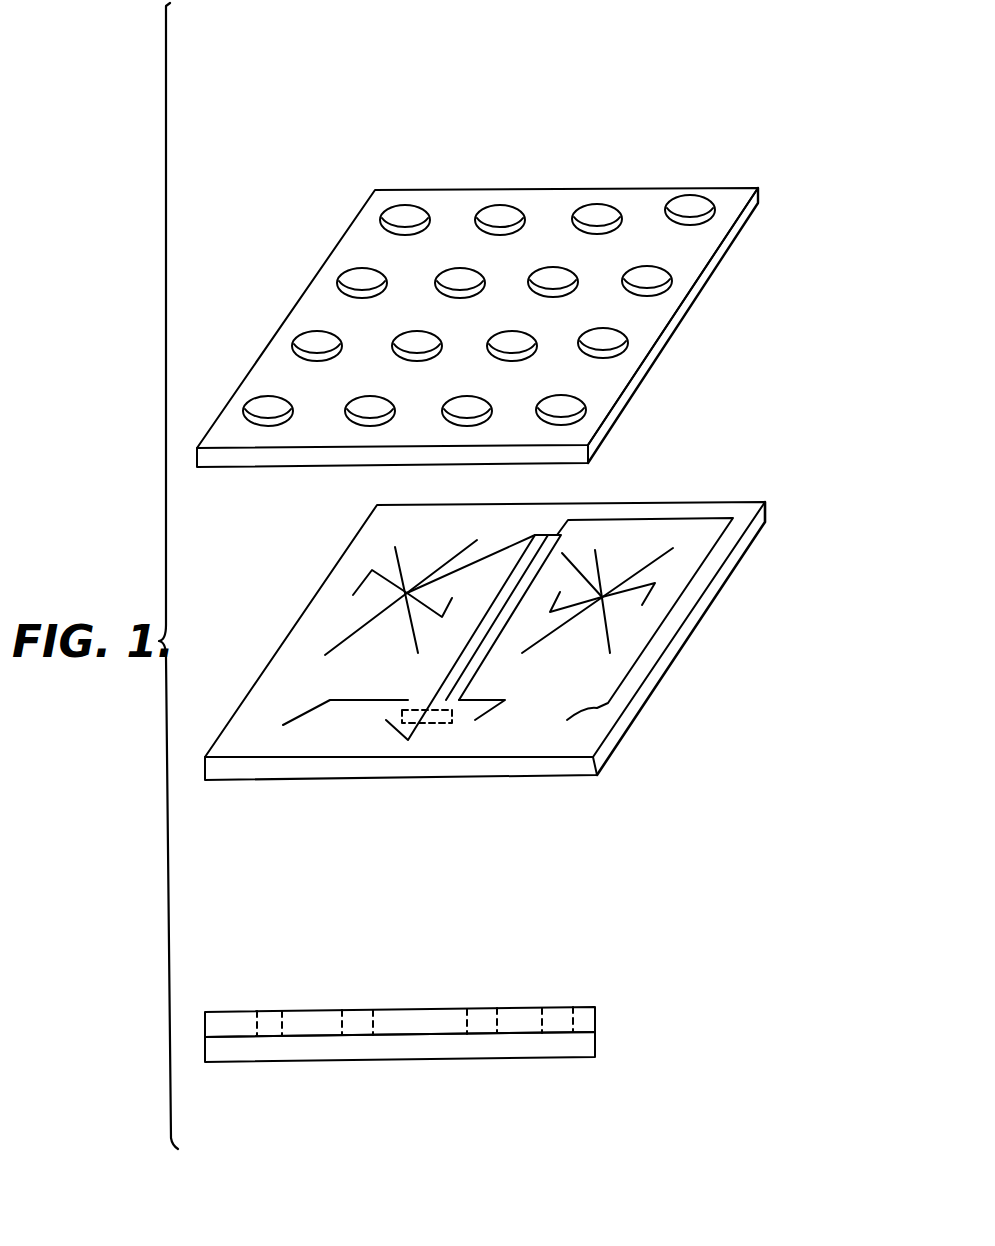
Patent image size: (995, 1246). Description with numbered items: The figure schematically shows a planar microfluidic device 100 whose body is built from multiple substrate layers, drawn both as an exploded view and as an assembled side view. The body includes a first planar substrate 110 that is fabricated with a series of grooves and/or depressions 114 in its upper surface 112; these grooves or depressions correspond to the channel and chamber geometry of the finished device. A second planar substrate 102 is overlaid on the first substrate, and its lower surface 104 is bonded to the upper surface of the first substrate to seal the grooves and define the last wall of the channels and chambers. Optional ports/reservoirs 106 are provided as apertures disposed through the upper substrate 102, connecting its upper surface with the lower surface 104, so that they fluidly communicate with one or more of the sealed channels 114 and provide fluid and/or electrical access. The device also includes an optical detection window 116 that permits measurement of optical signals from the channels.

The microfluidic device 100 is at (252, 113).
The second planar substrate 102 is at (780, 192).
The lower surface 104 is at (725, 262).
The ports/reservoirs 106 is at (417, 222).
The first planar substrate 110 is at (788, 503).
The upper surface 112 is at (387, 525).
The grooves and/or depressions 114 is at (565, 721).
The optical detection window 116 is at (413, 718).